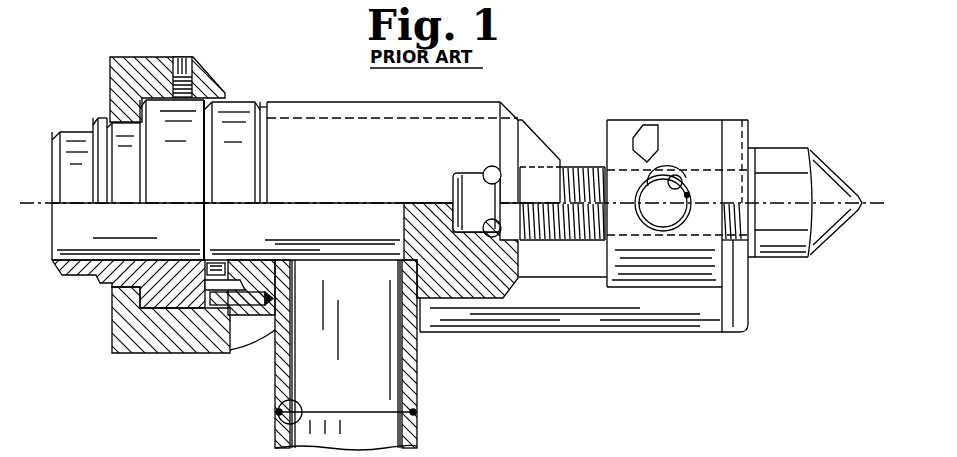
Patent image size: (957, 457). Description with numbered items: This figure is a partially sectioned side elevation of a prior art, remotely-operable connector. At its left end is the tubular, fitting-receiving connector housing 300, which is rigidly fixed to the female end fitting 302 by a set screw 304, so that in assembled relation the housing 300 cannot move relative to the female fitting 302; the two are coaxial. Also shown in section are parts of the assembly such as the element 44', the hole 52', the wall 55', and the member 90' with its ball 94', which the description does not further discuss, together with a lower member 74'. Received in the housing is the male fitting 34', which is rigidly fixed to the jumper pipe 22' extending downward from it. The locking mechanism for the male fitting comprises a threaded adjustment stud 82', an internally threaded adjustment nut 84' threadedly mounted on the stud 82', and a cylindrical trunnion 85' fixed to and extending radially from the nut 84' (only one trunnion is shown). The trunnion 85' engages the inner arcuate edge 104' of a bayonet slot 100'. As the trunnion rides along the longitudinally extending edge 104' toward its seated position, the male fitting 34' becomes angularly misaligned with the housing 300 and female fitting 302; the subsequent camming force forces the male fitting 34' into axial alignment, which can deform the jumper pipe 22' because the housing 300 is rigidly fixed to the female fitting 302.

The connector housing 300 is at (133, 55).
The set screw 304 is at (182, 58).
The female end fitting 302 is at (72, 282).
The retaining pin 44' is at (230, 342).
The cross hole 52' is at (263, 427).
The male fitting 34' is at (370, 357).
The column wall 55' is at (440, 354).
The jumper pipe 22' is at (378, 429).
The collar 90' is at (455, 197).
The ball 94' is at (474, 182).
The adjustment nut 84' is at (667, 205).
The trunnion 85' is at (663, 133).
The inner arcuate edge of bayonet slot 104' is at (694, 158).
The adjustment stud 82' is at (805, 179).
The bayonet slot 100' is at (624, 224).
The base plate 74' is at (601, 239).